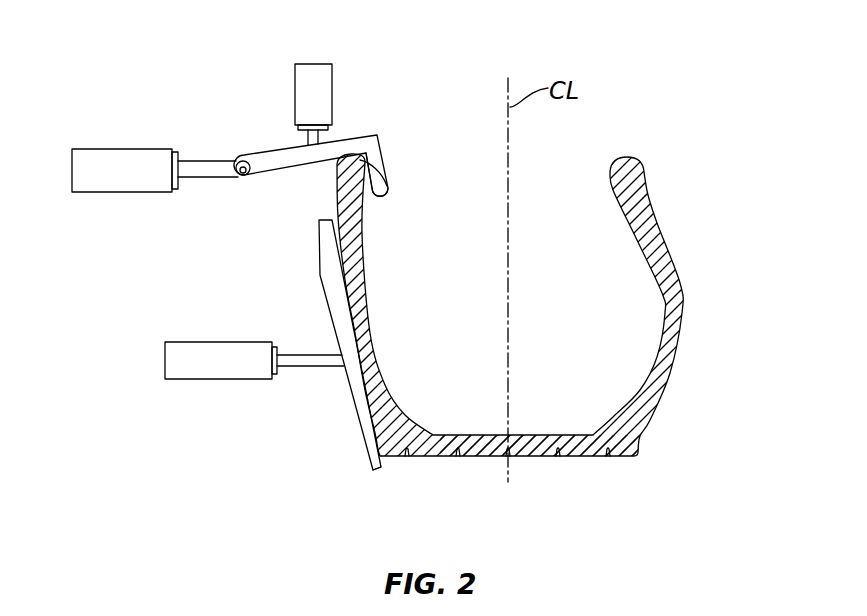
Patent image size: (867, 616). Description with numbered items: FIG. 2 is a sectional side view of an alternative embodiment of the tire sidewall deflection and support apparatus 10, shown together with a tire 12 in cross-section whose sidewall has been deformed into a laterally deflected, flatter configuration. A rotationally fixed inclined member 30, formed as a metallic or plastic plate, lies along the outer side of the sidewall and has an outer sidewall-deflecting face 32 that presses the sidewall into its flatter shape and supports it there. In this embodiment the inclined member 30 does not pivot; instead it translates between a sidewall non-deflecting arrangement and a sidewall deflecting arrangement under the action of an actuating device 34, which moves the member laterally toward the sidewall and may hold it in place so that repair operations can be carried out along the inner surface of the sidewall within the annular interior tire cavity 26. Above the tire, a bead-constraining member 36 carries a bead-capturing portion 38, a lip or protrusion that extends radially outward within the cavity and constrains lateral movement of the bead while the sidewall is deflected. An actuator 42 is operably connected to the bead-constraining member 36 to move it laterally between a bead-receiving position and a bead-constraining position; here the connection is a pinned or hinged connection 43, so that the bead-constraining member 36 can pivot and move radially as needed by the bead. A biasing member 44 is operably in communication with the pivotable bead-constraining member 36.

The tire sidewall deflection and support apparatus 10 is at (133, 47).
The tire 12 is at (448, 335).
The annular interior tire cavity 26 is at (585, 347).
The inclined member 30 is at (353, 360).
The sidewall-deflecting face 32 is at (380, 463).
The actuating device 34 is at (165, 362).
The bead-constraining member 36 is at (333, 159).
The bead-capturing portion 38 is at (387, 167).
The actuator 42 is at (105, 192).
The pinned or hinged connection 43 is at (243, 178).
The biasing member 44 is at (295, 85).